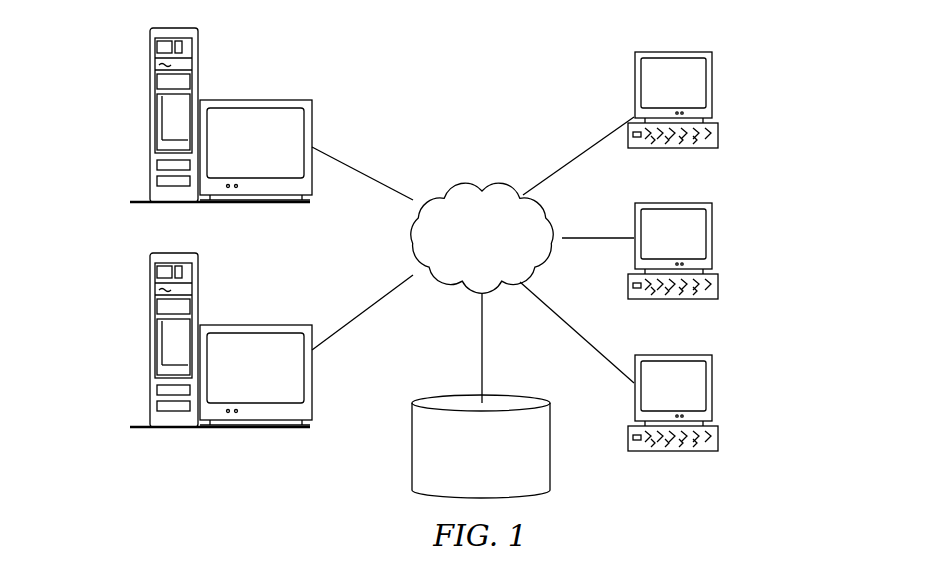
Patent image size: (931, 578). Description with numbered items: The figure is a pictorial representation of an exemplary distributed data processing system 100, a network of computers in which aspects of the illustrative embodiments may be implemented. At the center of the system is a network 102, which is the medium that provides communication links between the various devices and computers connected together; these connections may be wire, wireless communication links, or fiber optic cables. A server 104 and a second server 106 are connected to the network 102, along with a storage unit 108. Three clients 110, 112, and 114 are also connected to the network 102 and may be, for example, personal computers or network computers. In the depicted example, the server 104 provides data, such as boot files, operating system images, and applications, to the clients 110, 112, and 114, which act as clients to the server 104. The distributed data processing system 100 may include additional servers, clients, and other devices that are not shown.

The distributed data processing system 100 is at (538, 56).
The network 102 is at (452, 186).
The server 104 is at (150, 120).
The server 106 is at (150, 343).
The storage unit 108 is at (410, 456).
The client 110 is at (714, 88).
The client 112 is at (714, 241).
The client 114 is at (714, 388).